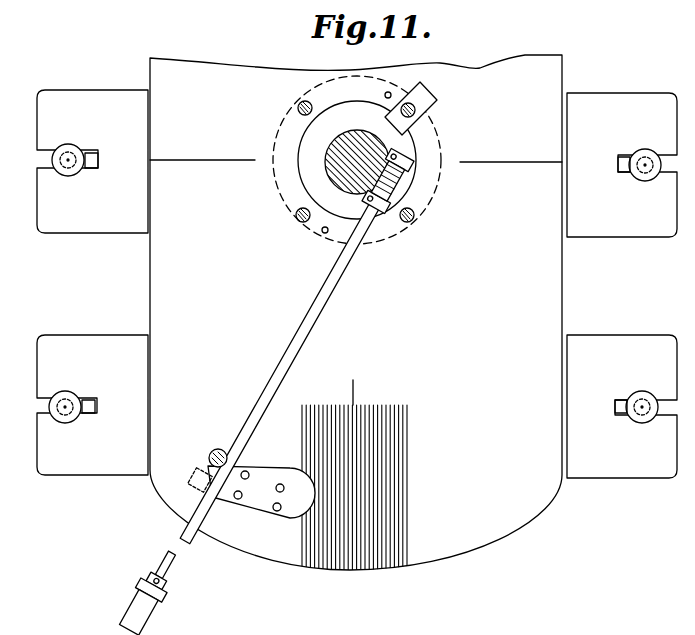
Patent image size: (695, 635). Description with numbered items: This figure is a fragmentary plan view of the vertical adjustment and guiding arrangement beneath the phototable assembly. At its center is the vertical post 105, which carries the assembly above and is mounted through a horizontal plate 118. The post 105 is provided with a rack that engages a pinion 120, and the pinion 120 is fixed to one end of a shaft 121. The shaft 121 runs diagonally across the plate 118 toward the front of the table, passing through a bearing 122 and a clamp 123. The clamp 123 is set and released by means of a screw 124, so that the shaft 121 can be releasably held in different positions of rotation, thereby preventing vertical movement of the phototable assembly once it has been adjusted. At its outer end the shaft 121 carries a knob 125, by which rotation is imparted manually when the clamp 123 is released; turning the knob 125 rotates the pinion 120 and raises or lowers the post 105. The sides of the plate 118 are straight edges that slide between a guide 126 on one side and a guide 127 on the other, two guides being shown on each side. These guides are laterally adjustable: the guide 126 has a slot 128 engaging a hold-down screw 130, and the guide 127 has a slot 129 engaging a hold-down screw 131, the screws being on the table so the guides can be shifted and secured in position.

The vertical post 105 is at (348, 142).
The horizontal plate 118 is at (210, 68).
The pinion 120 is at (407, 184).
The shaft 121 is at (322, 302).
The bearing 122 is at (200, 481).
The clamp 123 is at (235, 467).
The screw 124 is at (214, 450).
The knob 125 is at (124, 606).
The guide 126 is at (90, 225).
The guide 127 is at (627, 225).
The slot 128 is at (92, 152).
The slot 129 is at (622, 156).
The hold-down screw 130 is at (75, 172).
The hold-down screw 131 is at (641, 176).